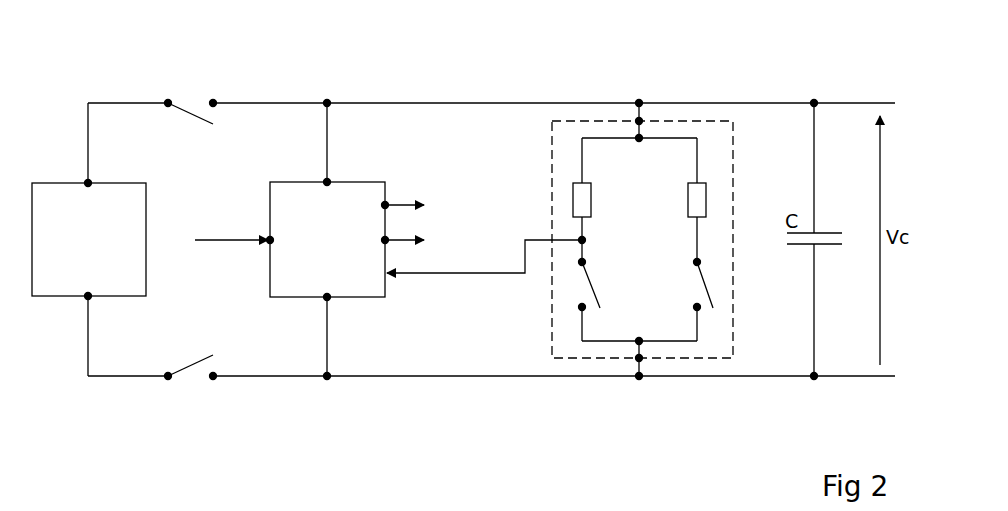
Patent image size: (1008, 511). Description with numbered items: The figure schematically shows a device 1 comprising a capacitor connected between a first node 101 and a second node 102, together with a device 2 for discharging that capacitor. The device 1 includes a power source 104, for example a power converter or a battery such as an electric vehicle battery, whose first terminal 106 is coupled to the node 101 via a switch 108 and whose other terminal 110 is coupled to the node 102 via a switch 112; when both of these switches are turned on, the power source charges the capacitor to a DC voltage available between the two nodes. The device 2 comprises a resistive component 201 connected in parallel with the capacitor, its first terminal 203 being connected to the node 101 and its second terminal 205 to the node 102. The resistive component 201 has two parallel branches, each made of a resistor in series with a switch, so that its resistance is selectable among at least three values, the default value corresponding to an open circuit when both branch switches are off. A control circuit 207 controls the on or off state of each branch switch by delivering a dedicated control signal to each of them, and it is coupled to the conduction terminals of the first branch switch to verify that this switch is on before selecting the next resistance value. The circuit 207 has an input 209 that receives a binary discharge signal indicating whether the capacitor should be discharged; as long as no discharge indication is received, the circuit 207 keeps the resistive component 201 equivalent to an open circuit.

The device 1 is at (104, 71).
The device for discharging capacitor 2 is at (497, 127).
The node 101 is at (816, 101).
The node 102 is at (813, 379).
The power source 104 is at (89, 239).
The first terminal 106 is at (86, 181).
The switch 108 is at (191, 105).
The terminal 110 is at (86, 298).
The switch 112 is at (193, 374).
The resistive component 201 is at (713, 120).
The first terminal 203 is at (641, 119).
The second terminal 205 is at (635, 362).
The circuit 207 is at (329, 240).
The input 209 is at (268, 239).